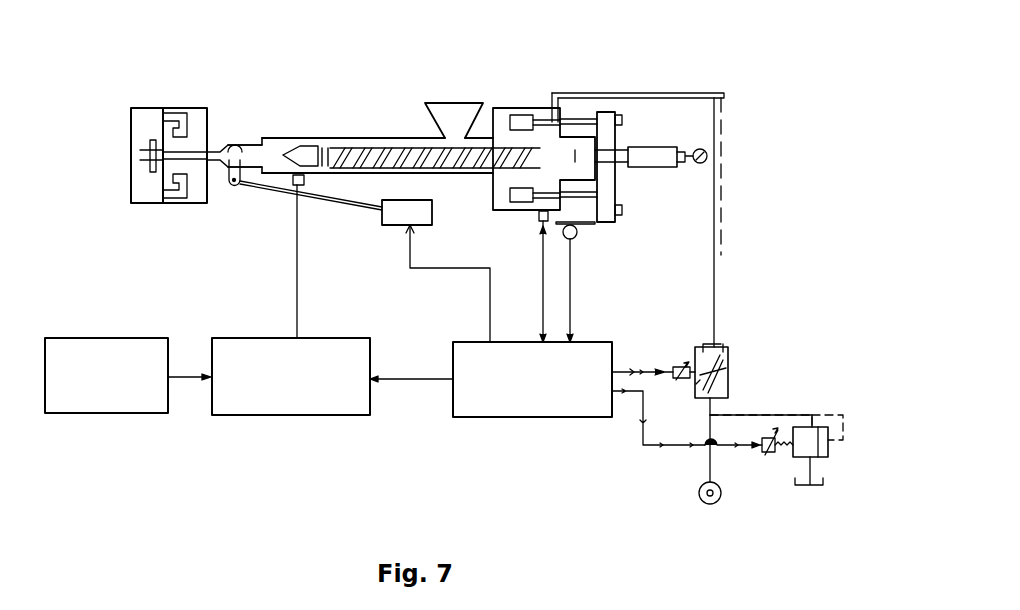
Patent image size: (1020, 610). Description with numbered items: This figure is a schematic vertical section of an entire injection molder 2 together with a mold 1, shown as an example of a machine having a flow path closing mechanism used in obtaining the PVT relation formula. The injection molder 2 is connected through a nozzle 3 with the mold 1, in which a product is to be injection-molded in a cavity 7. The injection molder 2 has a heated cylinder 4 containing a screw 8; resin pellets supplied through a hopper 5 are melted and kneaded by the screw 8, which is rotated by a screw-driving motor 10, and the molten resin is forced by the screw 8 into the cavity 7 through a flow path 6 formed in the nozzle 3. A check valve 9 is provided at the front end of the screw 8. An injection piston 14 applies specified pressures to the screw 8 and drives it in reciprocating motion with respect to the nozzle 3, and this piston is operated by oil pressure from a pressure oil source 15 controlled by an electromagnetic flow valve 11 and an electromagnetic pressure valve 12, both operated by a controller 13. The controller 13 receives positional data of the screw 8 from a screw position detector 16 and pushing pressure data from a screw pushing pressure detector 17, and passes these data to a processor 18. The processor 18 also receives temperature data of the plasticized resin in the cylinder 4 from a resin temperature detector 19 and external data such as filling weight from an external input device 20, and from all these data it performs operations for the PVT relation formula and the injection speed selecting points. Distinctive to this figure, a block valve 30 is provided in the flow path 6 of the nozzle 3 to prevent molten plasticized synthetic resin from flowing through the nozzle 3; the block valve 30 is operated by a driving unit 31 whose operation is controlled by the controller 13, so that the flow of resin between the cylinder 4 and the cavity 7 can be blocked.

The mold 1 is at (139, 108).
The injection molder 2 is at (297, 130).
The nozzle 3 is at (217, 146).
The cylinder 4 is at (360, 147).
The hopper 5 is at (460, 104).
The flow path 6 is at (250, 145).
The cavity 7 is at (178, 108).
The screw 8 is at (401, 150).
The check valve 9 is at (333, 150).
The screw-driving motor 10 is at (667, 170).
The electromagnetic flow valve 11 is at (730, 352).
The electromagnetic pressure valve 12 is at (775, 455).
The controller 13 is at (553, 418).
The injection piston 14 is at (543, 112).
The pressure oil source 15 is at (718, 500).
The screw position detector 16 is at (578, 240).
The screw pushing pressure detector 17 is at (535, 217).
The processor 18 is at (272, 416).
The resin temperature detector 19 is at (308, 183).
The external input device 20 is at (127, 412).
The block valve 30 is at (229, 186).
The driving unit 31 is at (425, 225).